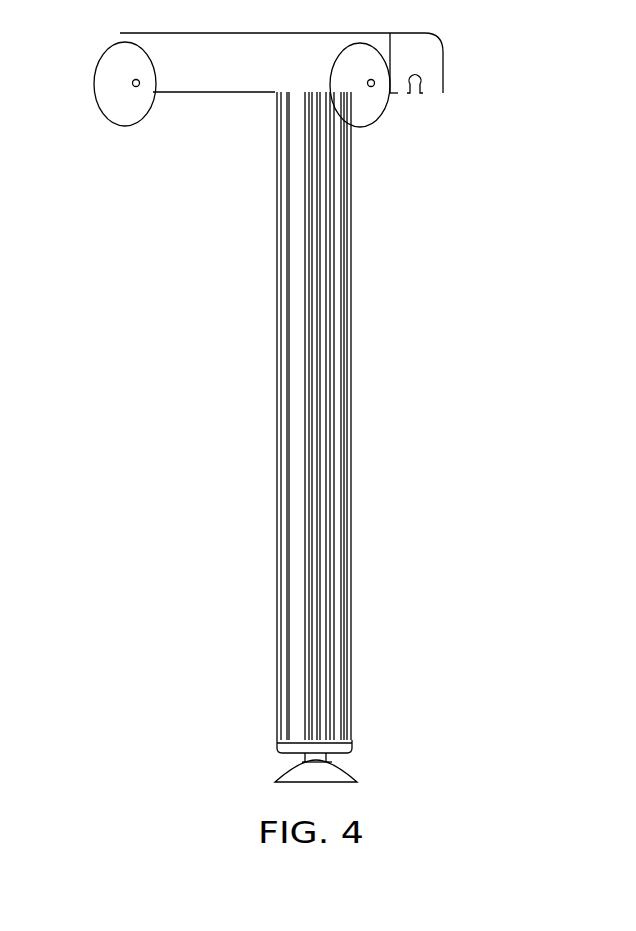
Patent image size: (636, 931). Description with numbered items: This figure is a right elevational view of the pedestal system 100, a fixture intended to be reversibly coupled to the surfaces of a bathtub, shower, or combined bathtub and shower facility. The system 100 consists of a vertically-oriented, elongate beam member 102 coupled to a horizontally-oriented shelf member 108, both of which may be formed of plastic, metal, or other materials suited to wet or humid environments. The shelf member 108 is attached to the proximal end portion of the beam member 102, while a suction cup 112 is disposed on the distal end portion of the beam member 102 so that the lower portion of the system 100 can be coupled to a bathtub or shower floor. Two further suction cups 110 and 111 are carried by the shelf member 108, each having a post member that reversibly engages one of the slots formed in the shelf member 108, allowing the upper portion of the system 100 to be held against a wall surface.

The pedestal system 100 is at (588, 102).
The beam member 102 is at (350, 320).
The shelf member 108 is at (218, 98).
The suction cup 110 is at (383, 110).
The suction cup 111 is at (110, 120).
The suction cup 112 is at (358, 773).